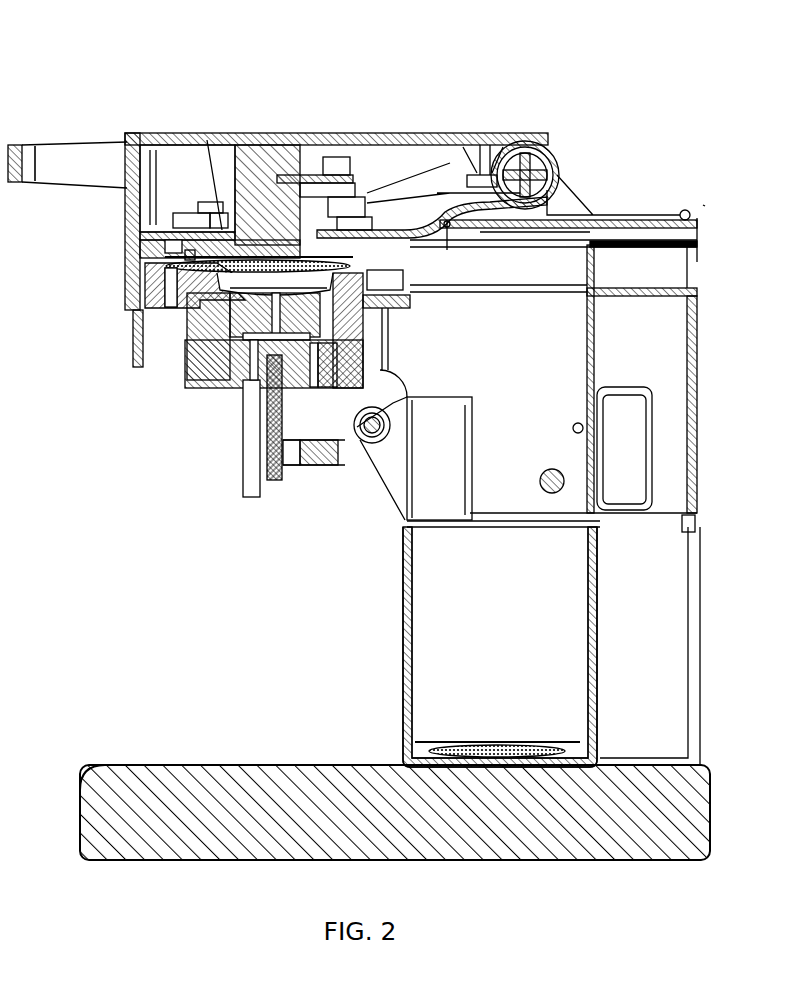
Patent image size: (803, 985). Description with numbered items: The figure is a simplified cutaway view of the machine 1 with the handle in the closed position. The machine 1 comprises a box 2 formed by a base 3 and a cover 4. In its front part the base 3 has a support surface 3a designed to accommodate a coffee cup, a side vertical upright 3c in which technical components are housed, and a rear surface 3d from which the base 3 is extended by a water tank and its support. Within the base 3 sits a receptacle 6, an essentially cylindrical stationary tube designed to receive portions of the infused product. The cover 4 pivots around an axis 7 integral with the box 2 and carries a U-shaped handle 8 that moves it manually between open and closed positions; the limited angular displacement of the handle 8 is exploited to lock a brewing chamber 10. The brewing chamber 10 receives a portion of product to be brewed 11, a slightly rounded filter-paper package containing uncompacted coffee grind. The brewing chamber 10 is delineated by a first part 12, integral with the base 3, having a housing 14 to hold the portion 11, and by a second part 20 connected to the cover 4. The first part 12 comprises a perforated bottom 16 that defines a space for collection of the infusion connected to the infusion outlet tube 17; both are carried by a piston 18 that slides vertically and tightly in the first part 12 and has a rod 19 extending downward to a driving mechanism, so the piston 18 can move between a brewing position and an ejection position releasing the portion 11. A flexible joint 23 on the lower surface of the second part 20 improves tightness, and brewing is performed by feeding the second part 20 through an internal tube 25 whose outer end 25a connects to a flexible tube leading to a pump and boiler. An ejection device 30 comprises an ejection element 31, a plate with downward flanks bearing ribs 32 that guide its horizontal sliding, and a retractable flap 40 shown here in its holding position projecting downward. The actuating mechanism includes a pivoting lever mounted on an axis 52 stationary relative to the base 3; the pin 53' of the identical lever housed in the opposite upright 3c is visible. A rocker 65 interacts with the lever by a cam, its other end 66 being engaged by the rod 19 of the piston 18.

The machine 1 is at (688, 48).
The box 2 is at (708, 346).
The base 3 is at (313, 788).
The support surface 3a is at (118, 763).
The side vertical upright 3c is at (677, 627).
The rear surface 3d is at (695, 462).
The cover 4 is at (220, 133).
The receptacle 6 is at (403, 653).
The axis 7 is at (533, 148).
The handle 8 is at (18, 150).
The brewing chamber 10 is at (140, 261).
The portion of the product to be brewed 11 is at (210, 268).
The first part of the brewing chamber 12 is at (363, 315).
The housing 14 is at (230, 298).
The perforated bottom 16 is at (220, 320).
The infusion outlet tube 17 is at (242, 465).
The piston 18 is at (230, 338).
The rod 19 is at (275, 418).
The second part of the brewing chamber 20 is at (190, 255).
The flexible joint 23 is at (370, 306).
The internal tube 25 is at (305, 175).
The outer end of the internal tube 25a is at (347, 175).
The ejection device 30 is at (712, 209).
The ejection element 31 is at (610, 220).
The ribs 32 is at (684, 251).
The retractable flap 40 is at (455, 245).
The axis 52 is at (547, 470).
The pin 53' is at (698, 186).
The rocker 65 is at (362, 458).
The end of the rocker 66 is at (285, 455).